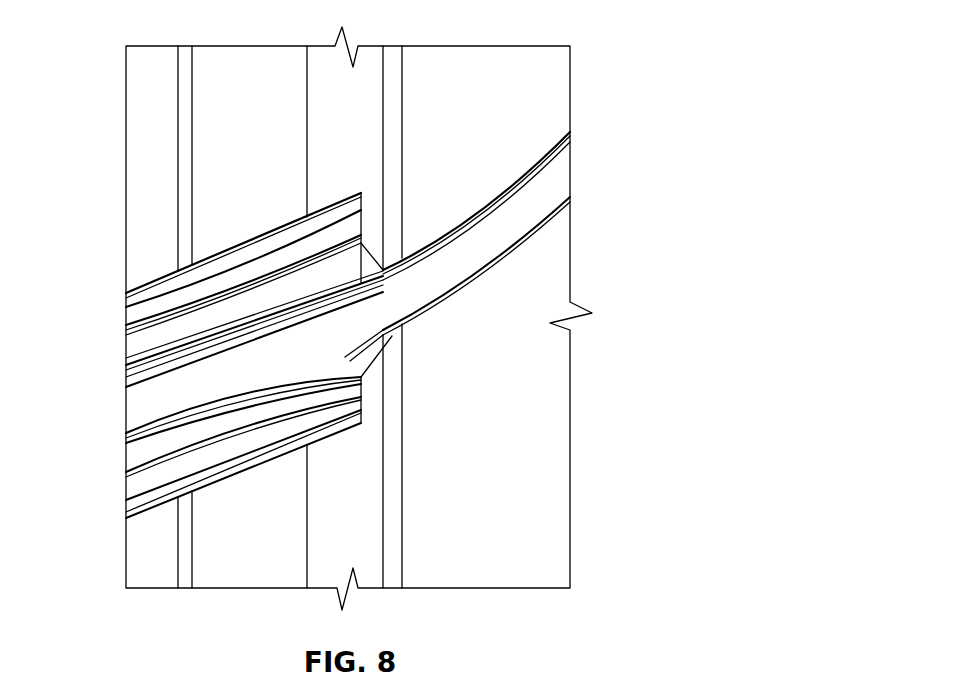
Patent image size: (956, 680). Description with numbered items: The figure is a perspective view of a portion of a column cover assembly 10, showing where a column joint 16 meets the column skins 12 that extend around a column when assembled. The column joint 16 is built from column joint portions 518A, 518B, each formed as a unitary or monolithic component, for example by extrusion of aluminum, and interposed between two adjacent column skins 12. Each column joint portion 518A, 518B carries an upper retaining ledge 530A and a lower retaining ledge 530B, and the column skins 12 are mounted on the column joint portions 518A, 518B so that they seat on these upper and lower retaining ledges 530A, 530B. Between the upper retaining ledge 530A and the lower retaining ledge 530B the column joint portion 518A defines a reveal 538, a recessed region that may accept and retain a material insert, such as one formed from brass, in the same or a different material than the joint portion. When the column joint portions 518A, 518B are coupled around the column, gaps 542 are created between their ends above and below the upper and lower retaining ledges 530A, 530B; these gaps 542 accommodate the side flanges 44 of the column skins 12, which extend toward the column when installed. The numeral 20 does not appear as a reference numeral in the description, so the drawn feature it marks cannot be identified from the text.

The column cover assembly 10 is at (636, 279).
The column skin 12 is at (463, 67).
The column joint 16 is at (636, 131).
The lower rail surface 20 is at (198, 456).
The side flange 44 is at (337, 67).
The column joint portion 518A is at (147, 316).
The column joint portion 518B is at (545, 207).
The upper retaining ledge 530A is at (497, 204).
The lower retaining ledge 530B is at (468, 290).
The reveal 538 is at (554, 182).
The gap 542 is at (371, 213).